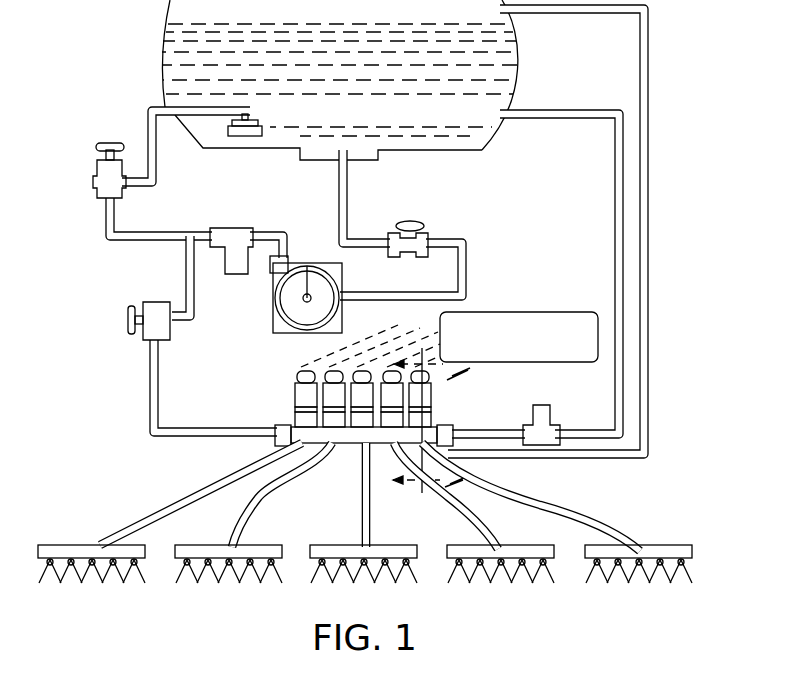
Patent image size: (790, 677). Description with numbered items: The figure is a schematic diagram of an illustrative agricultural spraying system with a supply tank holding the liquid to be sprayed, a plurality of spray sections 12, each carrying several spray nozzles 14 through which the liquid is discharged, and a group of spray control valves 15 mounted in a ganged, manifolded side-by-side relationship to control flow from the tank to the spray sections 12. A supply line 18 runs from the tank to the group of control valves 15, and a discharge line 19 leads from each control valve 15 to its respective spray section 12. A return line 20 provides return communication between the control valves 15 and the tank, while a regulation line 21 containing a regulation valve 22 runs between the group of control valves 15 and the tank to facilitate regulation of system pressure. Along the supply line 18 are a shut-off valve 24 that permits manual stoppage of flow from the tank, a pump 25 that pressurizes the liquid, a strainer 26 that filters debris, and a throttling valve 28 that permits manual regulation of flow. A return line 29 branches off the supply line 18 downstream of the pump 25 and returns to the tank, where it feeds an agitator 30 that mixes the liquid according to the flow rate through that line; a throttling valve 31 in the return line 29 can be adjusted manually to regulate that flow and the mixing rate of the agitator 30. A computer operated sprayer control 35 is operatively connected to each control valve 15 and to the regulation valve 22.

The spray section 12 is at (70, 543).
The spray nozzle 14 is at (63, 567).
The spray control valve 15 is at (291, 383).
The supply line 18 is at (348, 203).
The discharge line 19 is at (204, 487).
The return line 20 is at (651, 290).
The regulation line 21 is at (622, 410).
The regulation valve 22 is at (544, 445).
The shut-off valve 24 is at (426, 241).
The pump 25 is at (288, 312).
The strainer 26 is at (235, 236).
The throttling valve 28 is at (152, 337).
The return line 29 is at (141, 243).
The agitator 30 is at (250, 140).
The throttling valve 31 is at (100, 186).
The sprayer control 35 is at (567, 312).